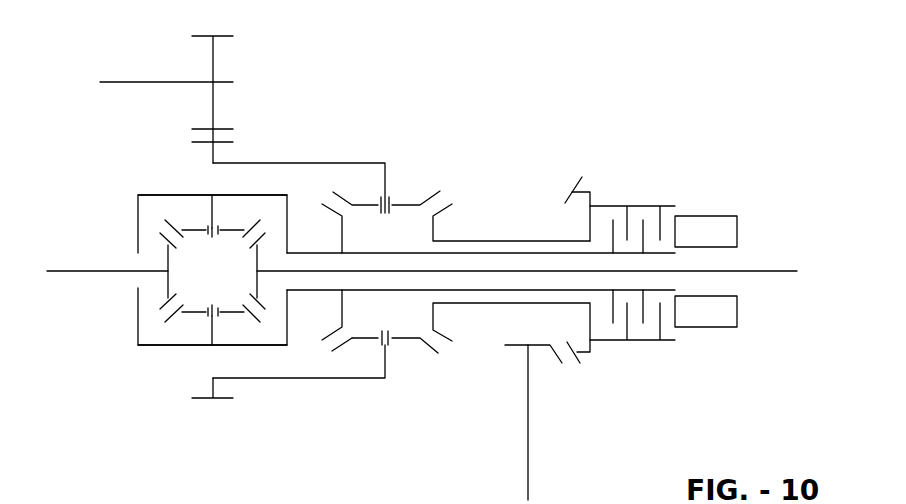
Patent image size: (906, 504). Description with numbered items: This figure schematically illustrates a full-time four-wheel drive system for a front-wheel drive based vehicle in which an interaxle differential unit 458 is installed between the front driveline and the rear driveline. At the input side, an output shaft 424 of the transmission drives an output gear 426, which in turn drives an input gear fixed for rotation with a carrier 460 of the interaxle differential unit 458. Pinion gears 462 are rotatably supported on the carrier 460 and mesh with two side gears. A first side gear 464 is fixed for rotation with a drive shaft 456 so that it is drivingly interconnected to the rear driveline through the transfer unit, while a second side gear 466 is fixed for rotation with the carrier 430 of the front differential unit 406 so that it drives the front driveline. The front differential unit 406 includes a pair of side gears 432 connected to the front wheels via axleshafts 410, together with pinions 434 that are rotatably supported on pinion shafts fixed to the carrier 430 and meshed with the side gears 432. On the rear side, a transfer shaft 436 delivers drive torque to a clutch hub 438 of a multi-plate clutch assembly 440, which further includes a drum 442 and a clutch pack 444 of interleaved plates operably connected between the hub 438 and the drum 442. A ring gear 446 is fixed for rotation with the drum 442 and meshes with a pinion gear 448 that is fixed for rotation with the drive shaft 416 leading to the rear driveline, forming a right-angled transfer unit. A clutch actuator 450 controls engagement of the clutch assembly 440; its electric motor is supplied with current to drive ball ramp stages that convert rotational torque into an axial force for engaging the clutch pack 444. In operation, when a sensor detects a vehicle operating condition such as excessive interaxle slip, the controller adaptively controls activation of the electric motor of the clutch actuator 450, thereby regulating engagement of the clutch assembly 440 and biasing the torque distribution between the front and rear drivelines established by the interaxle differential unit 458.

The front differential unit 406 is at (165, 345).
The axleshafts 410 is at (72, 270).
The drive shaft 416 is at (528, 470).
The output shaft 424 is at (137, 82).
The output gear 426 is at (228, 35).
The carrier 430 is at (152, 176).
The side gears 432 is at (253, 285).
The pinions 434 is at (220, 228).
The transfer shaft 436 is at (477, 292).
The clutch hub 438 is at (637, 255).
The multi-plate clutch assembly 440 is at (636, 207).
The drum 442 is at (678, 342).
The clutch pack 444 is at (622, 224).
The ring gear 446 is at (570, 185).
The pinion gear 448 is at (505, 352).
The clutch actuator 450 is at (745, 228).
The drive shaft 456 is at (521, 242).
The interaxle differential unit 458 is at (415, 173).
The carrier 460 is at (298, 163).
The pinion gears 462 is at (366, 205).
The first side gear 464 is at (437, 228).
The second side gear 466 is at (342, 308).